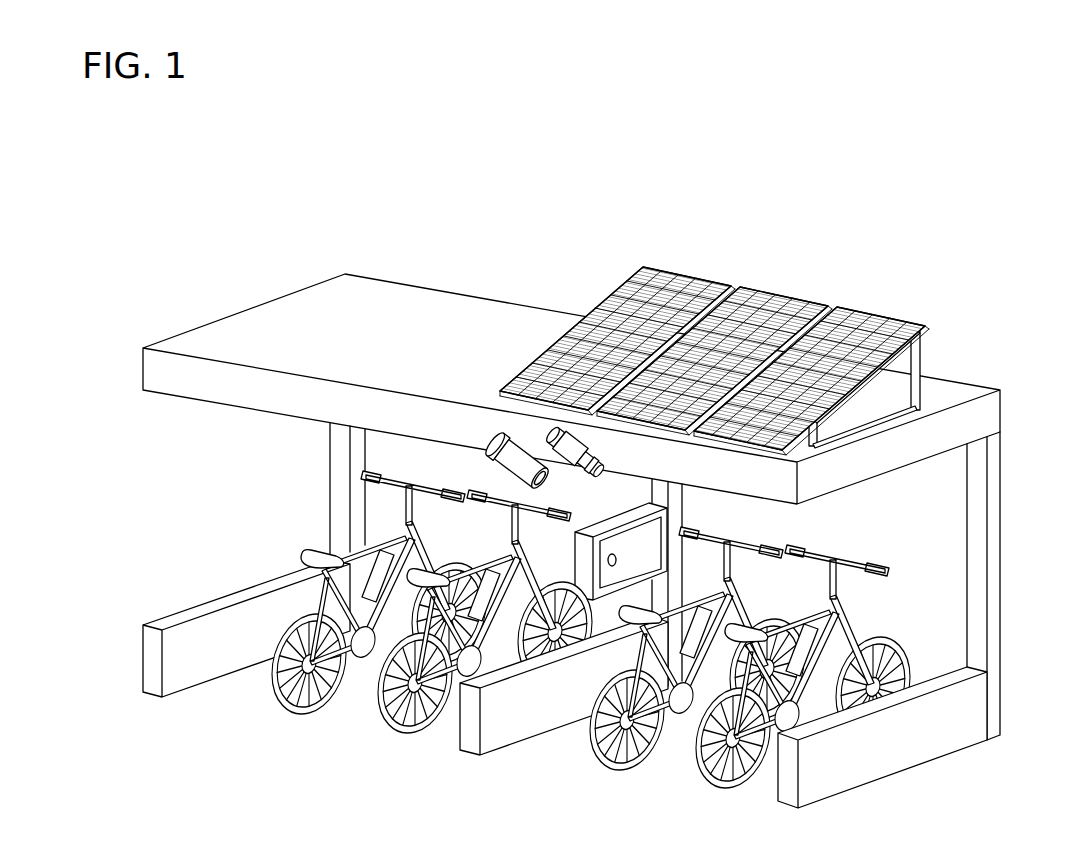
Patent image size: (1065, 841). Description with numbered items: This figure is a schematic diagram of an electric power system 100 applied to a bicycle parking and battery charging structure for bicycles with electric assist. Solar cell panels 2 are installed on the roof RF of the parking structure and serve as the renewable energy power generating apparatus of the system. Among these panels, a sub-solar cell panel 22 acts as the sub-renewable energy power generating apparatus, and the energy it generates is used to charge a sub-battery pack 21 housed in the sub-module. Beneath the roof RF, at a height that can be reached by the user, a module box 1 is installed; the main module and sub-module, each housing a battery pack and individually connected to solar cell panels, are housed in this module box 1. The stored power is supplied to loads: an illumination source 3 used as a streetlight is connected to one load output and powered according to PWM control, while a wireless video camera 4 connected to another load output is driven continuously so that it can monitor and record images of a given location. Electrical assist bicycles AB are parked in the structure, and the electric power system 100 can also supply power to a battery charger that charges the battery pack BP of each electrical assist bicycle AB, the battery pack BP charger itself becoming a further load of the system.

The module box 1 is at (603, 645).
The solar cell panels 2 is at (714, 295).
The sub-battery pack 21 is at (707, 191).
The sub-solar cell panel 22 is at (683, 273).
The illumination source 3 is at (525, 437).
The wireless video camera 4 is at (583, 432).
The electric power system 100 is at (943, 279).
The roof RF is at (950, 390).
The electrical assist bicycle AB is at (850, 632).
The battery pack BP is at (700, 662).